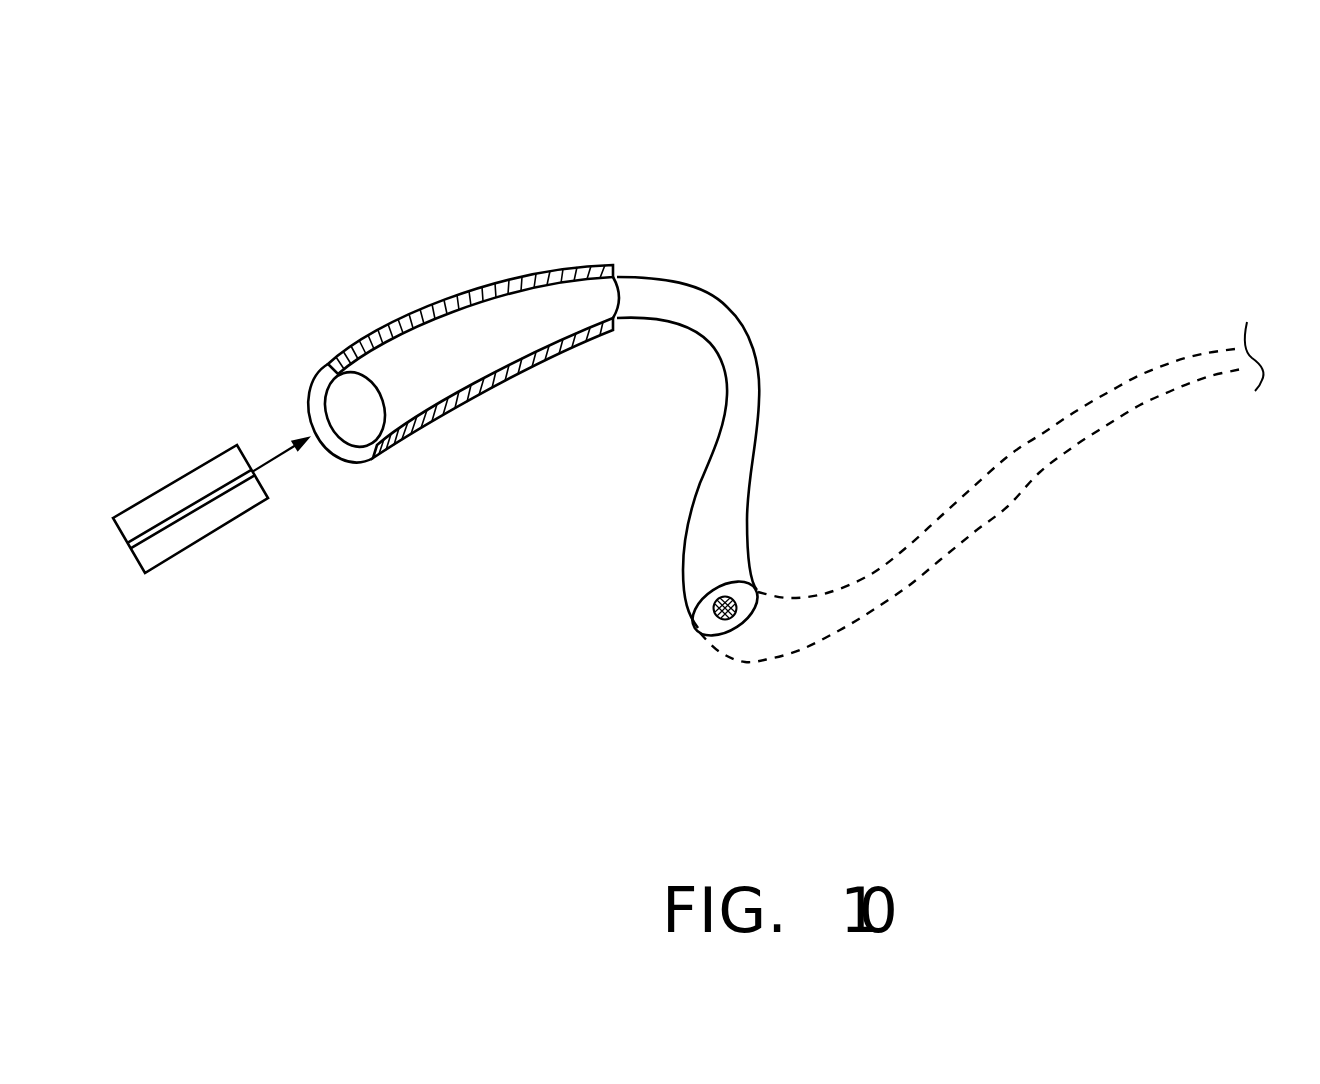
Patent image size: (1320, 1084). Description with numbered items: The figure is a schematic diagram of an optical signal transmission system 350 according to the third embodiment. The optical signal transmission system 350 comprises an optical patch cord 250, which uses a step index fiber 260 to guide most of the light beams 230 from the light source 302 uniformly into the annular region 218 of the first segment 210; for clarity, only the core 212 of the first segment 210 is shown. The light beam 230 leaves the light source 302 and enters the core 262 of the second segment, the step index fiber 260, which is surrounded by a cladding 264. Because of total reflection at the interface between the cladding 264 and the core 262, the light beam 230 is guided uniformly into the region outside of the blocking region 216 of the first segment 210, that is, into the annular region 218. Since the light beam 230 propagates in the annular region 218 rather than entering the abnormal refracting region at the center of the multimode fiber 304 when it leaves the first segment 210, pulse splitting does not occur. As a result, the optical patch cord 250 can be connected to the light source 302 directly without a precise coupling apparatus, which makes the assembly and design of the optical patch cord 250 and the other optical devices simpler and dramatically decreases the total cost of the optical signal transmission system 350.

The first segment 210 is at (665, 280).
The core 212 is at (720, 686).
The blocking region 216 is at (732, 611).
The annular region 218 is at (691, 664).
The light beams 230 is at (272, 463).
The optical patch cord 250 is at (495, 315).
The step index fiber 260 is at (405, 320).
The core 262 is at (530, 328).
The cladding 264 is at (450, 400).
The light source 302 is at (172, 480).
The multimode fiber 304 is at (988, 513).
The optical signal transmission system 350 is at (808, 218).